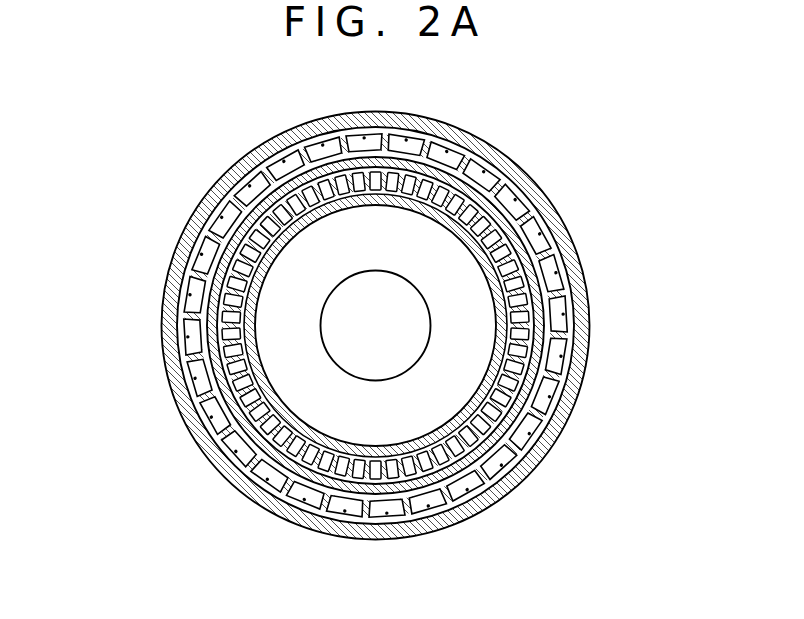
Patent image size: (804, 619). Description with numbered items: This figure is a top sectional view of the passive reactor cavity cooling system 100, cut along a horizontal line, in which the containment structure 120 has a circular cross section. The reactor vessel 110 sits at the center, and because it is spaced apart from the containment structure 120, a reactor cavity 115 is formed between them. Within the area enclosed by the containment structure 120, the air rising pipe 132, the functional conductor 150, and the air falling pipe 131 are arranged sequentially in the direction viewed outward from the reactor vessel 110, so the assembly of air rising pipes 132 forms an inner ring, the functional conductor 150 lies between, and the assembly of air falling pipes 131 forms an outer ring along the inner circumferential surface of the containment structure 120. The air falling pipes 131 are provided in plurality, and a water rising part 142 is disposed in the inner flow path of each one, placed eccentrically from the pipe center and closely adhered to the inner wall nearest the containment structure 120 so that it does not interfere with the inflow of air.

The passive reactor cavity cooling system 100 is at (199, 187).
The water rising part 142 is at (196, 244).
The air falling pipe 131 is at (190, 310).
The air rising pipe 132 is at (200, 394).
The functional conductor 150 is at (208, 345).
The containment structure 120 is at (212, 438).
The reactor vessel 110 is at (330, 352).
The reactor cavity 115 is at (335, 440).